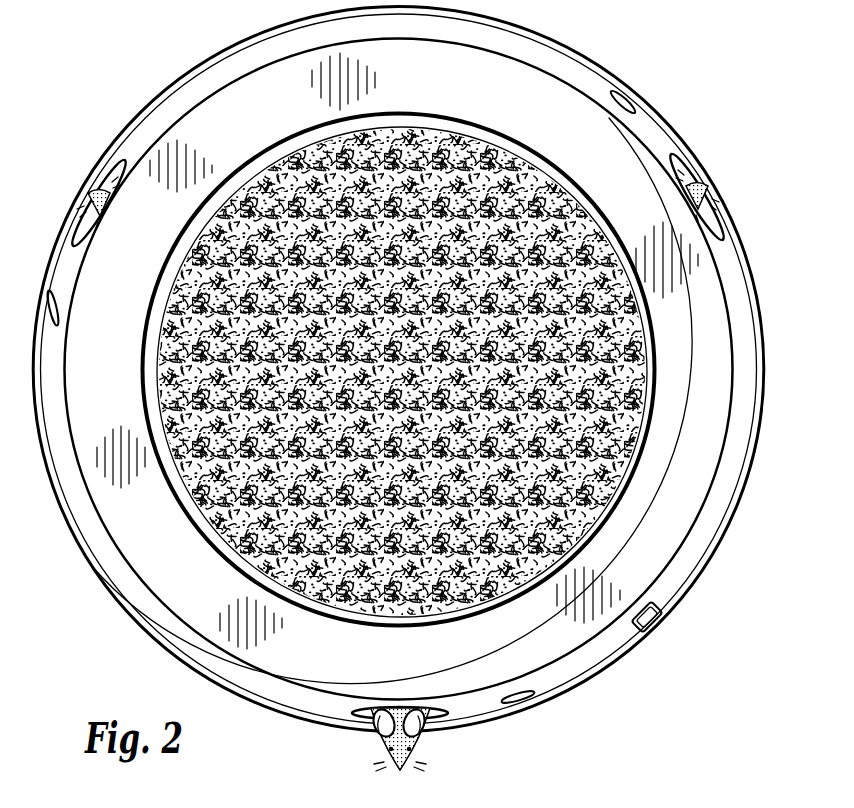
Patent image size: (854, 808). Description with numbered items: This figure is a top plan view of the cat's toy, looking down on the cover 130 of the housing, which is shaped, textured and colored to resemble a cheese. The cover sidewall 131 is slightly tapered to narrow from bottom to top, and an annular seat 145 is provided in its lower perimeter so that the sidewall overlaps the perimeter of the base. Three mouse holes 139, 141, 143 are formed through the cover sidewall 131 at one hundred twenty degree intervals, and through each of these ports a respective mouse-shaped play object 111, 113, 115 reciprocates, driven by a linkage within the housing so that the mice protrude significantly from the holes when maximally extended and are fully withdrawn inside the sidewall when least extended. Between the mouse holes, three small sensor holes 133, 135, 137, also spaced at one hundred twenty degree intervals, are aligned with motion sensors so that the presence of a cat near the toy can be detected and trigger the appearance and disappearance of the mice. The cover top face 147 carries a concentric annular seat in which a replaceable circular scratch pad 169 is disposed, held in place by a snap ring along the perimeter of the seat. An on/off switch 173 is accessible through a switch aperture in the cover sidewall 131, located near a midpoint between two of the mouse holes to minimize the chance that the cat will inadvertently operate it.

The play object 111 is at (387, 748).
The play object 113 is at (703, 180).
The play object 115 is at (98, 185).
The cover 130 is at (166, 78).
The cover sidewall 131 is at (137, 552).
The sensor hole 133 is at (537, 698).
The sensor hole 135 is at (607, 87).
The sensor hole 137 is at (52, 302).
The mouse hole 139 is at (432, 736).
The mouse hole 141 is at (716, 200).
The mouse hole 143 is at (80, 205).
The annular seat 145 is at (147, 637).
The cover top face 147 is at (638, 543).
The scratch pad 169 is at (570, 452).
The on/off switch 173 is at (653, 633).